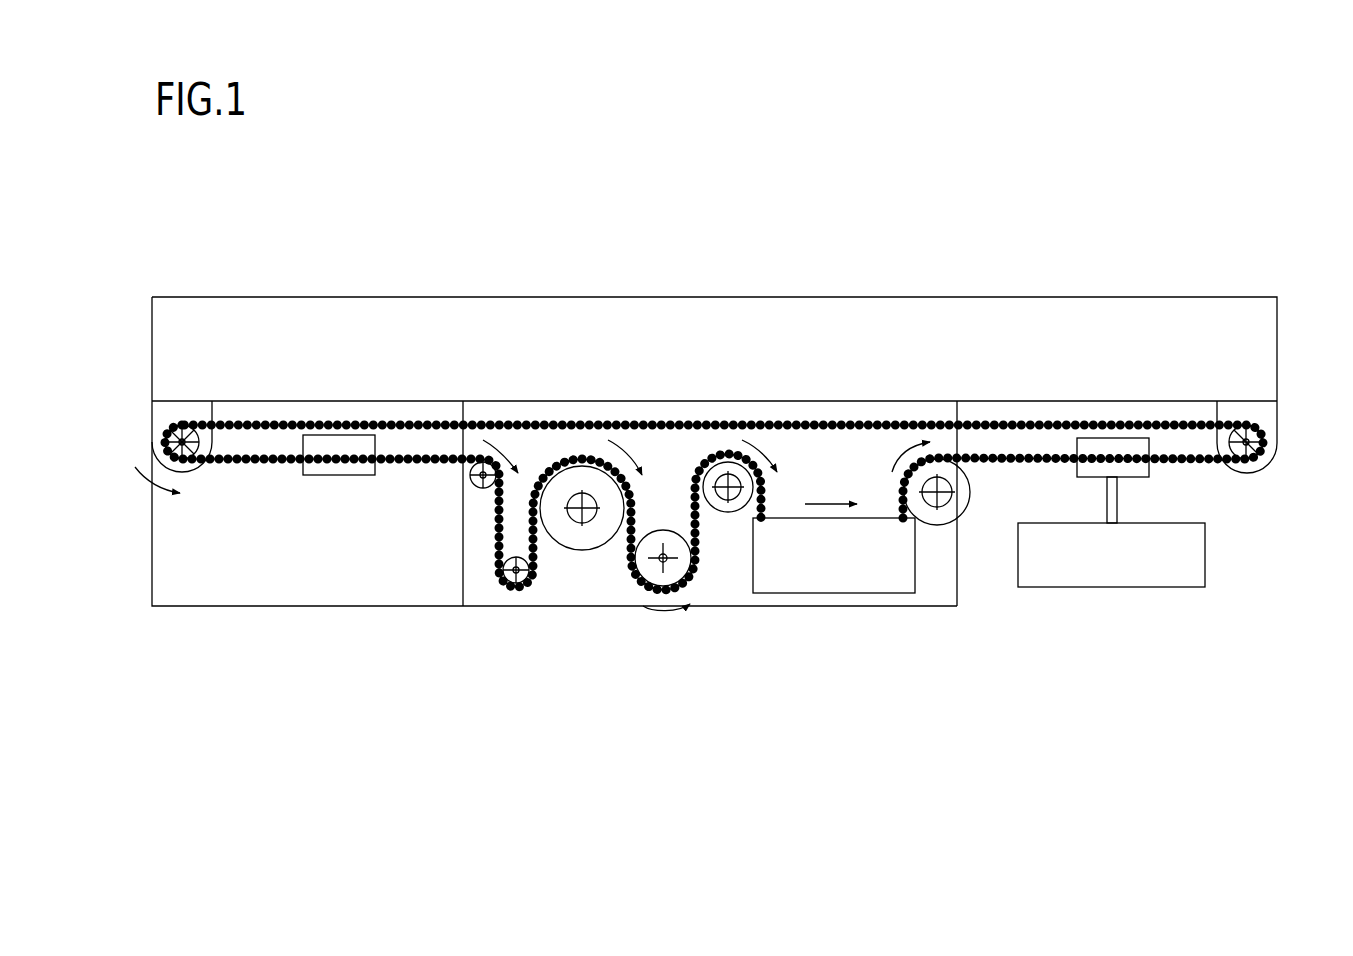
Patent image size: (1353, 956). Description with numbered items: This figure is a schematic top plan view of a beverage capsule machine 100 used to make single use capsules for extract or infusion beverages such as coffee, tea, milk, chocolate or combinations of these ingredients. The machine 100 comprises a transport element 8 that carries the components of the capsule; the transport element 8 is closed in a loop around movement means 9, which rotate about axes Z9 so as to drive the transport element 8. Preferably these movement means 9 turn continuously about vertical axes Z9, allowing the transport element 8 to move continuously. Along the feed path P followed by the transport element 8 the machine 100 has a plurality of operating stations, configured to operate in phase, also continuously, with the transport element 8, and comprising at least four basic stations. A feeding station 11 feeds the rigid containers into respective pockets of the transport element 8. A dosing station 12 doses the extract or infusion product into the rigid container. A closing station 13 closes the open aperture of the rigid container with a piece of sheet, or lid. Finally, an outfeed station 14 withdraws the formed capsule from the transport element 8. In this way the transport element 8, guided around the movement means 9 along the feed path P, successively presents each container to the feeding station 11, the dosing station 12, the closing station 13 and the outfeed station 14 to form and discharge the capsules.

The machine 100 is at (786, 257).
The transport element 8 is at (517, 423).
The movement means 9 is at (190, 432).
The feeding station 11 is at (301, 481).
The dosing station 12 is at (590, 574).
The closing station 13 is at (854, 584).
The outfeed station 14 is at (1113, 442).
The axes of rotation of the movement means Z9 is at (178, 436).
The feed path P is at (490, 430).